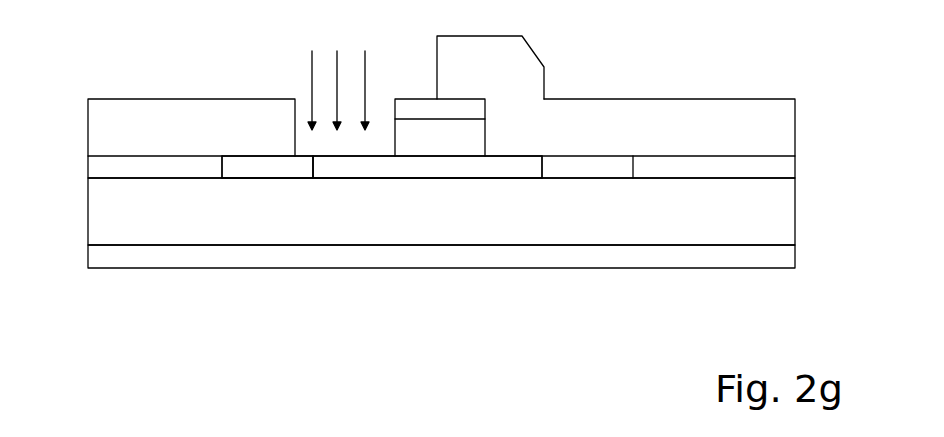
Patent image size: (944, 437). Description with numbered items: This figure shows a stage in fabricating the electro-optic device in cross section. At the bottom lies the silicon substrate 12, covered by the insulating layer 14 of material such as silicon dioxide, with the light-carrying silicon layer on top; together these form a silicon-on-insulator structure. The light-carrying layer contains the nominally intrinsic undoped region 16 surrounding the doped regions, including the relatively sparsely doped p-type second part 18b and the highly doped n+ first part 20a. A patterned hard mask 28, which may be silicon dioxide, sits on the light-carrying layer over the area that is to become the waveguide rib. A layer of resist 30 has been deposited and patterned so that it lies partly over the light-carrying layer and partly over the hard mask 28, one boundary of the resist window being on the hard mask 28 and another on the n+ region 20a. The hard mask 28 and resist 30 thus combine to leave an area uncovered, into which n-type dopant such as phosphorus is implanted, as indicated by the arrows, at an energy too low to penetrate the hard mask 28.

The substrate 12 is at (111, 257).
The insulating layer 14 is at (110, 221).
The undoped region 16 is at (168, 167).
The second part of p-type region 18b is at (473, 169).
The first part of n-type region 20a is at (268, 169).
The hard mask 28 is at (423, 107).
The layer of resist 30 is at (172, 105).